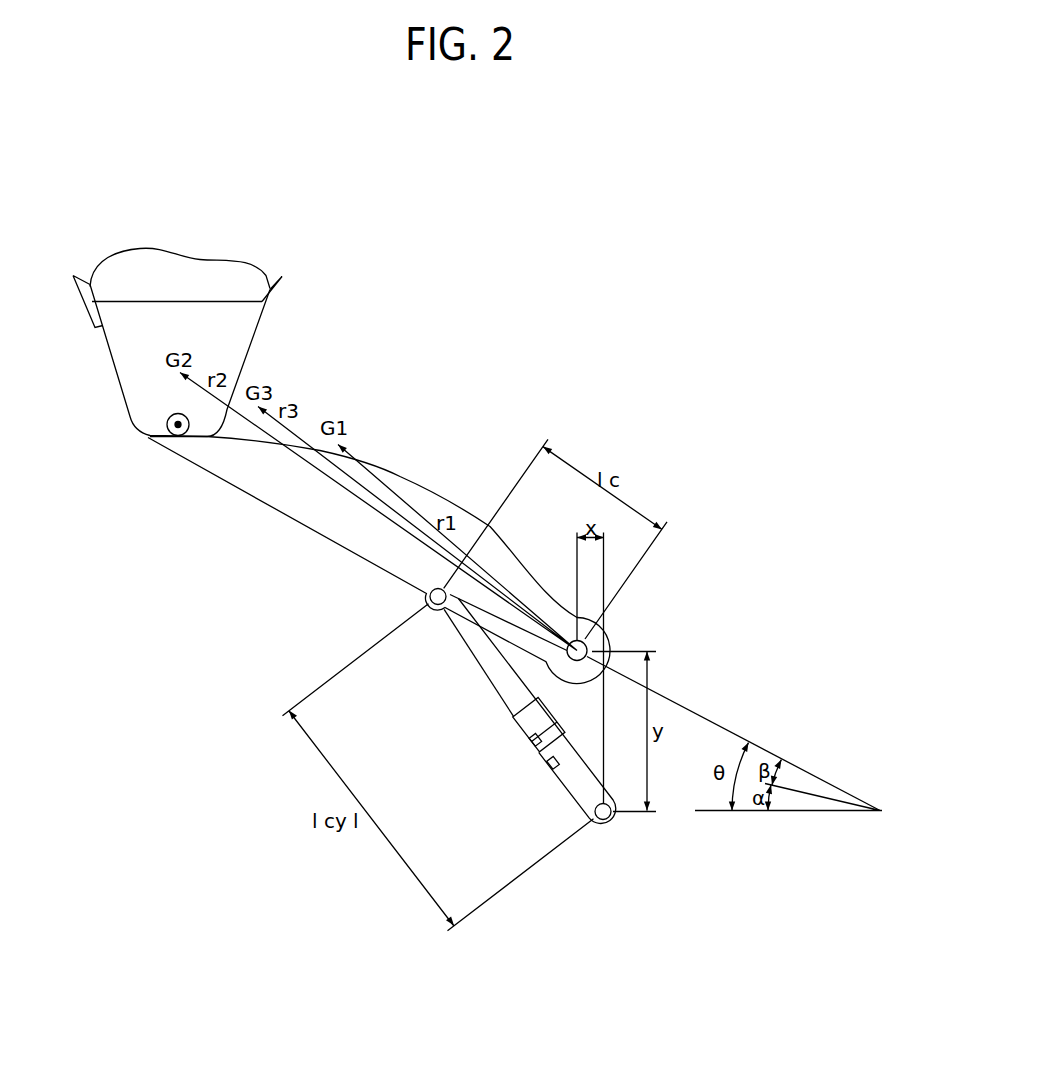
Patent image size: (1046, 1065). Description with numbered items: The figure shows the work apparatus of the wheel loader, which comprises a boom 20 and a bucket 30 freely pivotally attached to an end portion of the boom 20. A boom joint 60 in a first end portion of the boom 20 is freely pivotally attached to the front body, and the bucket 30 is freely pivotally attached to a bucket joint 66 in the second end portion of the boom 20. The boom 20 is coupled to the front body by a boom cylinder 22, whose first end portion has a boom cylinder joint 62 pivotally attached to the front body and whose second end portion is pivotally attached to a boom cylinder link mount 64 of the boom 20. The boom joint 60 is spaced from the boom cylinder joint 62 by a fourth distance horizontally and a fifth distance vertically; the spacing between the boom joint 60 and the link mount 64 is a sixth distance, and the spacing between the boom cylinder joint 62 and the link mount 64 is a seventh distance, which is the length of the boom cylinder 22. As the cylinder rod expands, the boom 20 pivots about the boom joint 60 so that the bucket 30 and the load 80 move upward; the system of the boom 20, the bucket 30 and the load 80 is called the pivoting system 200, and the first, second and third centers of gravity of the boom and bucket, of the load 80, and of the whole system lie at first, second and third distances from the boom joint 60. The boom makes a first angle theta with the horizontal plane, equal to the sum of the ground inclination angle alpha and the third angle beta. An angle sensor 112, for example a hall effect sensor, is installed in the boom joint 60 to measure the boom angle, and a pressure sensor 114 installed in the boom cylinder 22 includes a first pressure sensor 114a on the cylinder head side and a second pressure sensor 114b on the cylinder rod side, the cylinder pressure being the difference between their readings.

The pivoting system 200 is at (365, 353).
The load 80 is at (178, 267).
The bucket 30 is at (128, 371).
The bucket joint 66 is at (160, 429).
The boom 20 is at (285, 511).
The boom cylinder link mount 64 is at (415, 597).
The boom joint 60 is at (589, 647).
The angle sensor 112 is at (606, 656).
The boom cylinder 22 is at (514, 727).
The pressure sensor 114 is at (427, 750).
The first pressure sensor 114a is at (551, 764).
The second pressure sensor 114b is at (533, 741).
The boom cylinder joint 62 is at (616, 822).